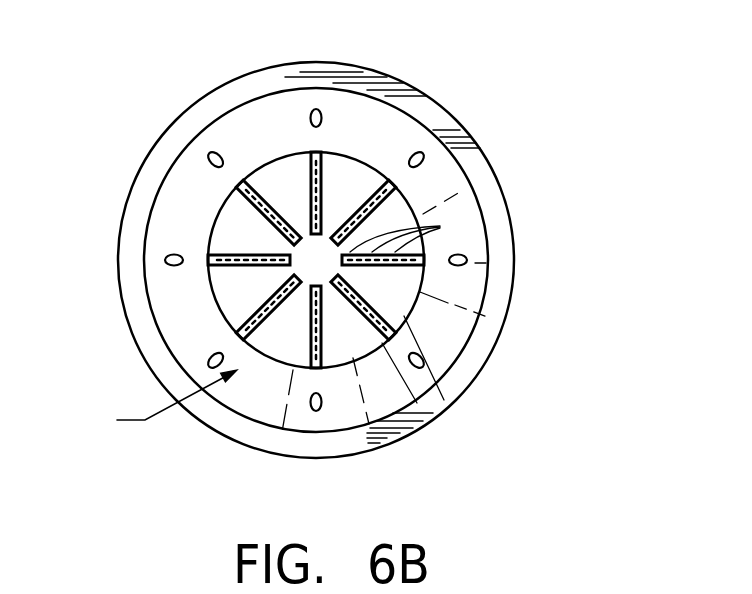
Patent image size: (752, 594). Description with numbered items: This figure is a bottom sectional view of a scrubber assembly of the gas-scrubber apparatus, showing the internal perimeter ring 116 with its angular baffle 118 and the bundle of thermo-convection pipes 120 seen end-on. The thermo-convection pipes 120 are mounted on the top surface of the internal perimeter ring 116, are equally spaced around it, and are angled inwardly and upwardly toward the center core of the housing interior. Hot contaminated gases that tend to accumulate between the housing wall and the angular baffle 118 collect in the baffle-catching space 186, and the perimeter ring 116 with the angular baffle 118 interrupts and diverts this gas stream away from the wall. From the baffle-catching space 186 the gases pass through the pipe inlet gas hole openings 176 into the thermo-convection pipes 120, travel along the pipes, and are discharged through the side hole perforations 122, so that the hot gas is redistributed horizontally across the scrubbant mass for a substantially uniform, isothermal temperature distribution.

The internal perimeter ring 116 is at (165, 147).
The angular baffle 118 is at (266, 117).
The thermo-convection pipes 120 is at (322, 188).
The perforations 122 is at (440, 228).
The pipe inlet gas hole openings 176 is at (420, 356).
The baffle-catching space 186 is at (149, 402).